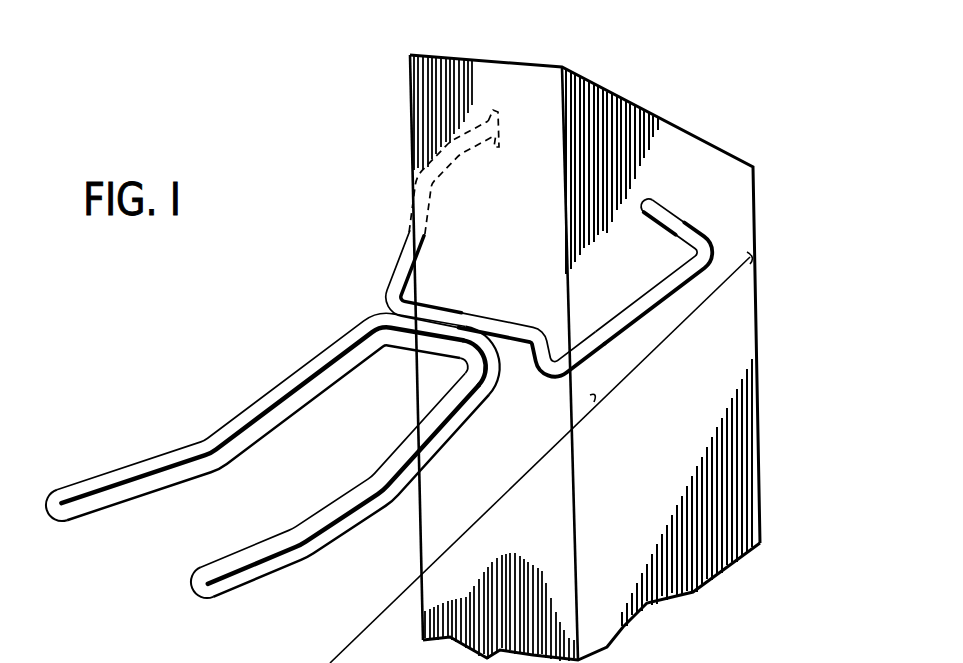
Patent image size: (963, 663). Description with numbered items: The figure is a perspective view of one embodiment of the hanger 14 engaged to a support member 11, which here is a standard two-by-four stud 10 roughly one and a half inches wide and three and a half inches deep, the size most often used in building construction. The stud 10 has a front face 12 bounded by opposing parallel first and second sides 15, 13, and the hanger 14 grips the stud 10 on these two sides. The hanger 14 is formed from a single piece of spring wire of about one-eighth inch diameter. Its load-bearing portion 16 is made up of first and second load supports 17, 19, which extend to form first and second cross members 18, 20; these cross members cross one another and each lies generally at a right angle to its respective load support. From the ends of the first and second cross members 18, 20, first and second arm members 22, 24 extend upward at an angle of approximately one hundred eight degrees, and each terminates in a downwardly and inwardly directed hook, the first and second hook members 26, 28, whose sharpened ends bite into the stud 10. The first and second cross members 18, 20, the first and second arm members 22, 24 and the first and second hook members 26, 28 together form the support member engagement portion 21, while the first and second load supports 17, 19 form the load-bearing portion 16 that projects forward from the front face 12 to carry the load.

The stud 10 is at (769, 192).
The support member 11 is at (660, 83).
The front face 12 is at (518, 80).
The second side 13 is at (409, 95).
The hanger 14 is at (273, 420).
The first side 15 is at (693, 165).
The load-bearing portion 16 is at (444, 553).
The first load support 17 is at (208, 443).
The first cross member 18 is at (467, 340).
The second load support 19 is at (458, 434).
The second cross member 20 is at (508, 323).
The support member engagement portion 21 is at (679, 326).
The first arm member 22 is at (644, 316).
The second arm member 24 is at (405, 255).
The first hook member 26 is at (680, 212).
The second hook member 28 is at (487, 121).